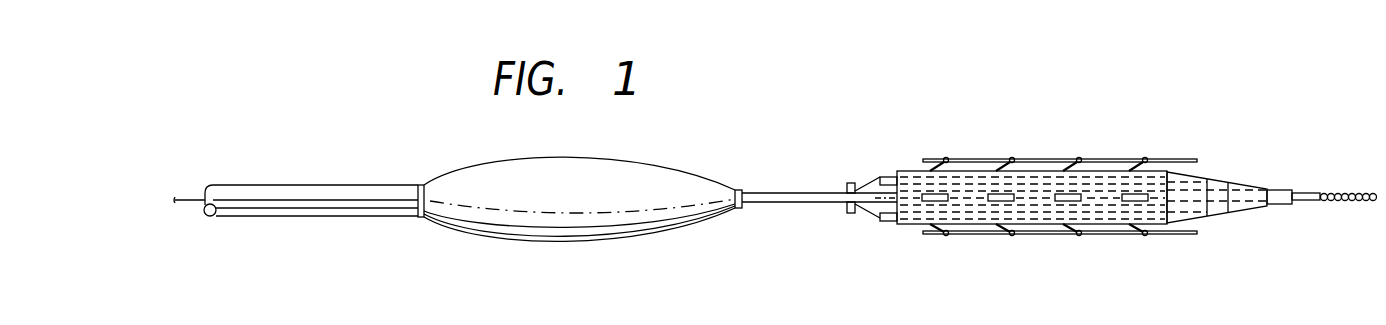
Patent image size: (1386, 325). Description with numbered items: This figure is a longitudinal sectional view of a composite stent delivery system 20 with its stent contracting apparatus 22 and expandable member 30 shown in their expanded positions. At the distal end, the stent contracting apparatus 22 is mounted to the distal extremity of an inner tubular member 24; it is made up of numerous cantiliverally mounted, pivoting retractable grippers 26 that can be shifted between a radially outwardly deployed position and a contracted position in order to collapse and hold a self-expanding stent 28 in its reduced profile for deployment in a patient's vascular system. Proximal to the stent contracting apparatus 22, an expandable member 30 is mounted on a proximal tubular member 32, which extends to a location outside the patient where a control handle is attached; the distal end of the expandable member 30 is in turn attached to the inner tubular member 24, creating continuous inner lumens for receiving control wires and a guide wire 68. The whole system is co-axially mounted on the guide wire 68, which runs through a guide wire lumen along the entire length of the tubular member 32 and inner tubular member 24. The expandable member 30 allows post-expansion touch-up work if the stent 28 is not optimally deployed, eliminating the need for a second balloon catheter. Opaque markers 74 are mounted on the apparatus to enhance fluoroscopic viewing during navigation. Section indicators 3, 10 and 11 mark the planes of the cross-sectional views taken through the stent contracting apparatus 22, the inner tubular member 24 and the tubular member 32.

The stent delivery system 20 is at (1095, 122).
The stent contracting apparatus 22 is at (1152, 152).
The inner tubular member 24 is at (820, 206).
The grippers 26 is at (1128, 236).
The self-expanding stent 28 is at (960, 160).
The expandable member 30 is at (683, 172).
The tubular member 32 is at (252, 220).
The guide wire 68 is at (196, 200).
The opaque markers 74 is at (421, 185).
The section line 3- 3 is at (892, 193).
The section line 10- 10 is at (788, 247).
The section line 11- 11 is at (315, 180).